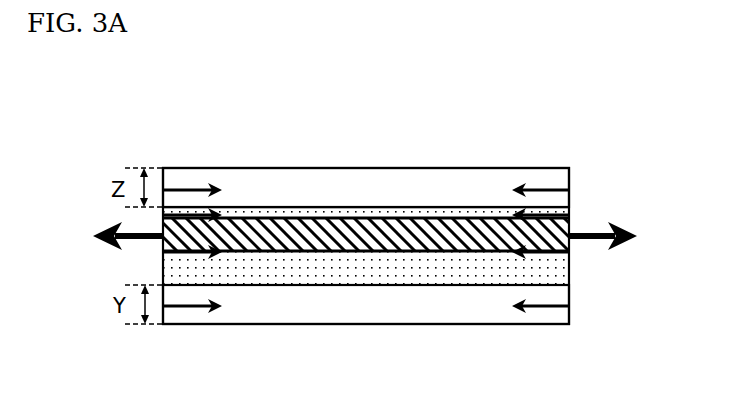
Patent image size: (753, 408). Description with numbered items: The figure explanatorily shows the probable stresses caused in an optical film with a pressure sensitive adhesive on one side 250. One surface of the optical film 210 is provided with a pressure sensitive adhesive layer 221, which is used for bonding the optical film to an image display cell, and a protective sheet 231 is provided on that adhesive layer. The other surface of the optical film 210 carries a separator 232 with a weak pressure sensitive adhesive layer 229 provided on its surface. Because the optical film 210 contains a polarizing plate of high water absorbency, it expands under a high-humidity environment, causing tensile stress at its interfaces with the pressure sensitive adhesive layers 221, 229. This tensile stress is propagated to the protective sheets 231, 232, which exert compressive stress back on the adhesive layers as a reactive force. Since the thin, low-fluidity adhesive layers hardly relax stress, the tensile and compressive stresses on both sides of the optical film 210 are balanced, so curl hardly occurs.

The optical film with a pressure sensitive adhesive on one side 250 is at (520, 128).
The separator 232 is at (362, 175).
The weak pressure sensitive adhesive layer 229 is at (562, 213).
The optical film 210 is at (365, 238).
The pressure sensitive adhesive layer 221 is at (558, 268).
The protective sheet 231 is at (378, 310).